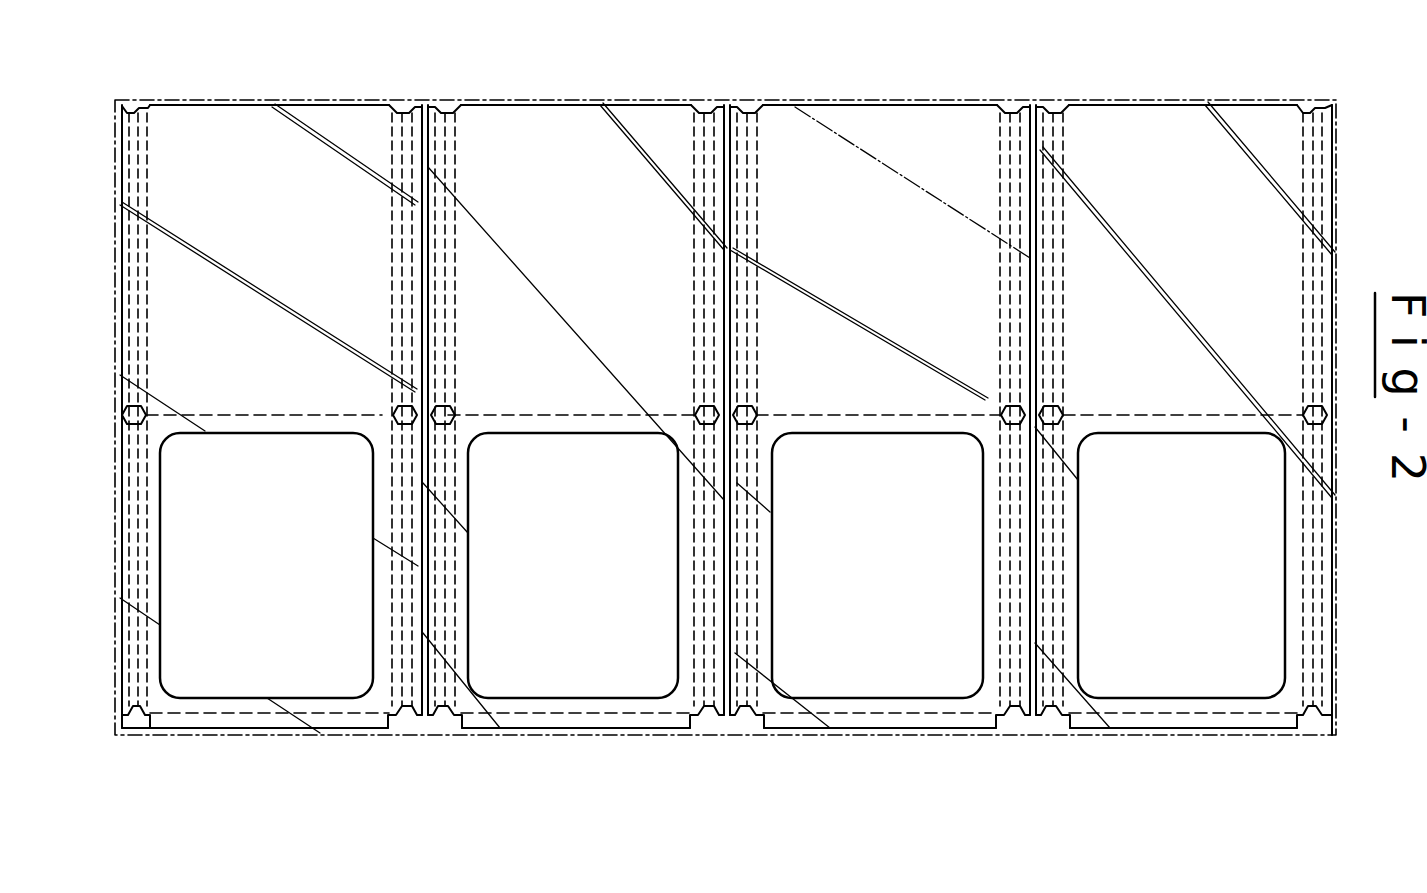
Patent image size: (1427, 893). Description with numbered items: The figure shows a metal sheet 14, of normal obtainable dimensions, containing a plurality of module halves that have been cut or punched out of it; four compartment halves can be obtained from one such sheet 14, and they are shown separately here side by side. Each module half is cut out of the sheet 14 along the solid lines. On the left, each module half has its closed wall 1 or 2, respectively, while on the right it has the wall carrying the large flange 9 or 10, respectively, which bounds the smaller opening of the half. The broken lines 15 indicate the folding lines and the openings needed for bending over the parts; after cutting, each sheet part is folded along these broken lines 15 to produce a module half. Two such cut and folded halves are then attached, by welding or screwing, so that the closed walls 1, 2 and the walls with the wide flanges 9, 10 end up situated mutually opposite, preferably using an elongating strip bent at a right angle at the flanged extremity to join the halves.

The closed wall 1 is at (1172, 112).
The closed wall 2 is at (870, 124).
The large flange 9 is at (1138, 707).
The large flange 10 is at (877, 707).
The metal sheet 14 is at (1177, 732).
The broken lines 15 is at (1058, 248).